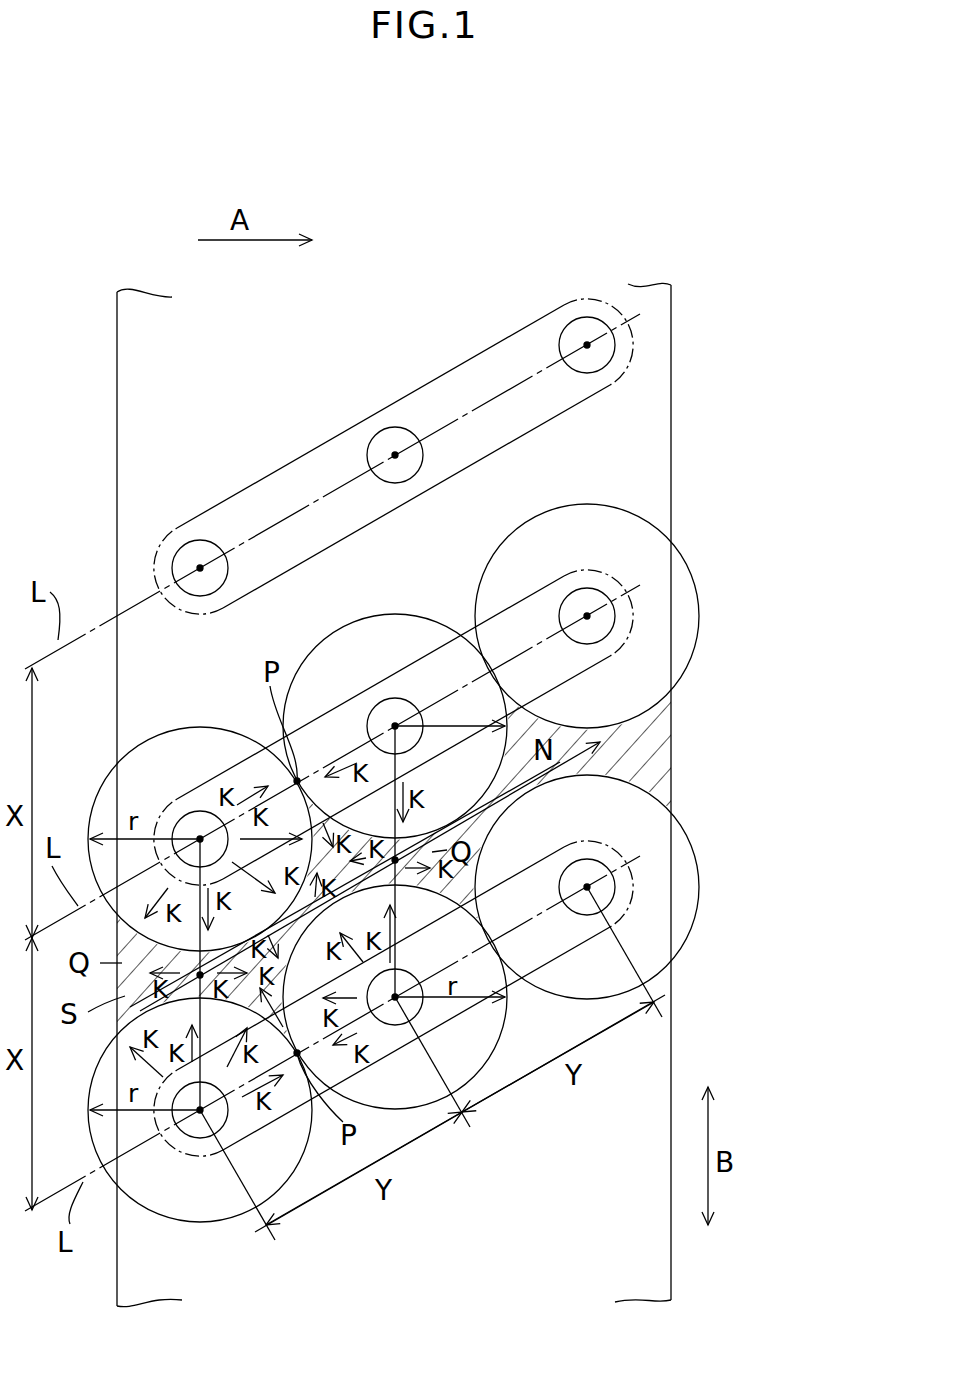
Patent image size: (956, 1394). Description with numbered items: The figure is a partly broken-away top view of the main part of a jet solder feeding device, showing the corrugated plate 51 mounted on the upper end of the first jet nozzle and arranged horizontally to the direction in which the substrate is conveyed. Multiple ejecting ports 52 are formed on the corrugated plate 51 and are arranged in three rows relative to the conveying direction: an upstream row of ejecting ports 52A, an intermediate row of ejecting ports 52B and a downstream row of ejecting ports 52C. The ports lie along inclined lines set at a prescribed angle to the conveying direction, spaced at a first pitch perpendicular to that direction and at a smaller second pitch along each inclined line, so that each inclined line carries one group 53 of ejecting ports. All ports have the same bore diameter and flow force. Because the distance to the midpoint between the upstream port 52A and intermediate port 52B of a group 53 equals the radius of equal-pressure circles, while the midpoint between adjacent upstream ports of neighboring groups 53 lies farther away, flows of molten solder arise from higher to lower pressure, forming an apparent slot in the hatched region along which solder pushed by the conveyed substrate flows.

The corrugated plate 51 is at (671, 406).
The ejecting ports 52 is at (587, 317).
The upstream row of ejecting ports 52A is at (199, 811).
The intermediate row of ejecting ports 52B is at (394, 698).
The downstream row of ejecting ports 52C is at (590, 588).
The group of ejecting ports 53 is at (553, 413).